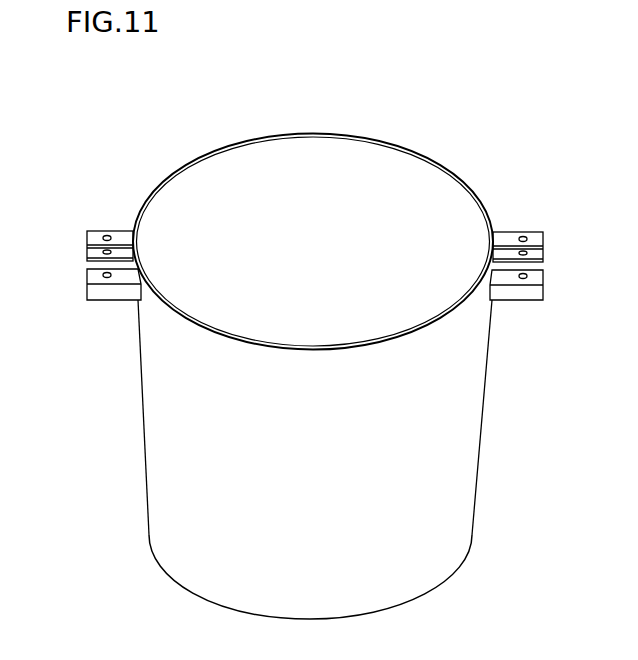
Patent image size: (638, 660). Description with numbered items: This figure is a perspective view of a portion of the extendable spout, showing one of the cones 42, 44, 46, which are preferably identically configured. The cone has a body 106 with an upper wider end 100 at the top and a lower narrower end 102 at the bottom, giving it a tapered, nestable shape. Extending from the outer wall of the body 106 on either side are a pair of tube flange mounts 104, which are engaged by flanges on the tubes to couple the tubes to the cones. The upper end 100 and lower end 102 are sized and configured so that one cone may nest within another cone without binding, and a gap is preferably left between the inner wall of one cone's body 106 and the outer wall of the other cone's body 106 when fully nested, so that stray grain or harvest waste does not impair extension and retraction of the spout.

The upper end 100 is at (430, 192).
The cone 42 is at (292, 229).
The cone 44 is at (292, 229).
The cone 46 is at (203, 180).
The lower end 102 is at (452, 572).
The tube flange mounts 104 is at (95, 280).
The body 106 is at (458, 415).